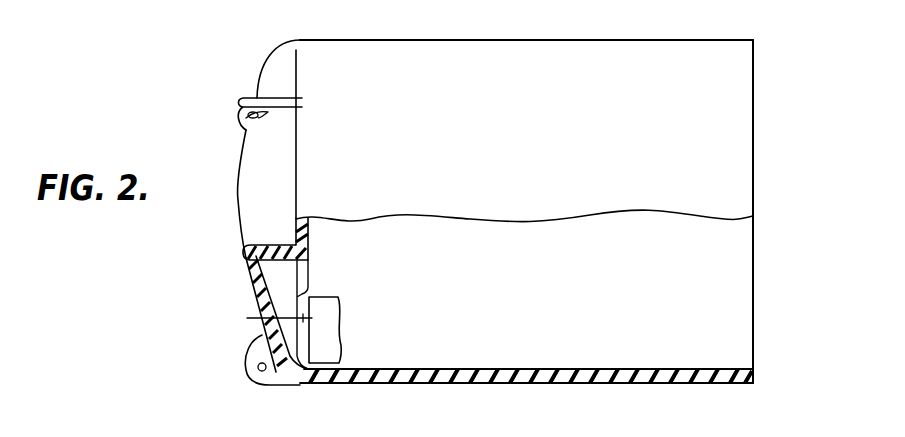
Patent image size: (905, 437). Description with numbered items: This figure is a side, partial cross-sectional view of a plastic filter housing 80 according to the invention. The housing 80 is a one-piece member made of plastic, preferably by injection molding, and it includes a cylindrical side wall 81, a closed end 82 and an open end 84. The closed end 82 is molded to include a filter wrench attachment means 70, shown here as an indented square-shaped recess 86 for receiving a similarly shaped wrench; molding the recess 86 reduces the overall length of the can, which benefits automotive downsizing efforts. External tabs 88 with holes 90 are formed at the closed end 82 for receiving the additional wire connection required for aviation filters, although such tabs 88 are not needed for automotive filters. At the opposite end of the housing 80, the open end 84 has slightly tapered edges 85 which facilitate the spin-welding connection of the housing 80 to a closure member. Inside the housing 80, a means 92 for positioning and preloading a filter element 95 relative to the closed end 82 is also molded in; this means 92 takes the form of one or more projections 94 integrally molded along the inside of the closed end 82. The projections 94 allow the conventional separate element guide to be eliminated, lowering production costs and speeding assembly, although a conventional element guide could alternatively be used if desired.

The filter wrench attachment means 70 is at (212, 244).
The housing 80 is at (550, 33).
The cylindrical side wall 81 is at (497, 384).
The closed end 82 is at (238, 195).
The open end 84 is at (753, 193).
The tapered edges 85 is at (753, 40).
The recess 86 is at (275, 246).
The external tabs 88 is at (242, 108).
The holes 90 is at (258, 117).
The means for positioning and preloading 92 is at (294, 292).
The projections 94 is at (267, 320).
The filter element 95 is at (330, 305).